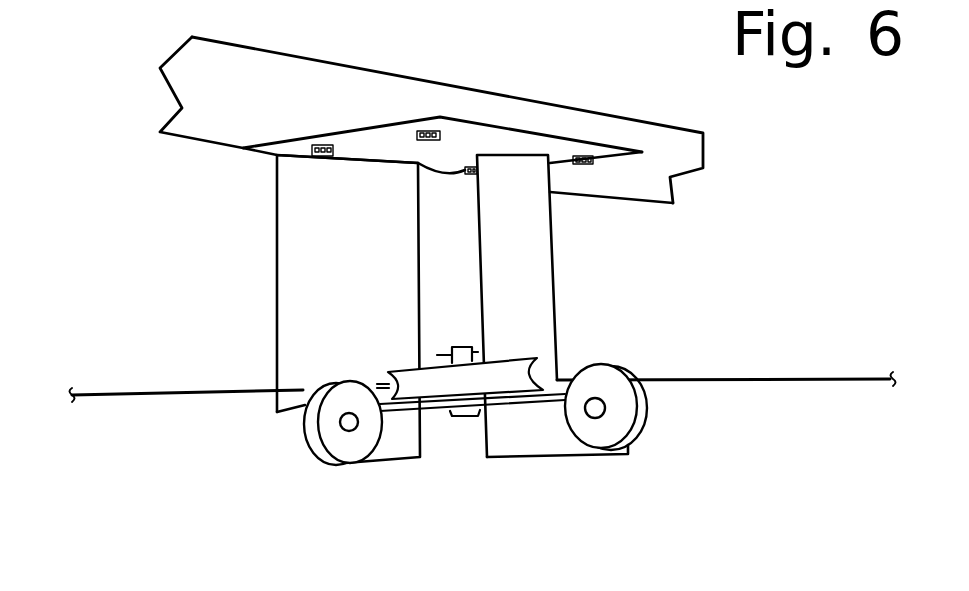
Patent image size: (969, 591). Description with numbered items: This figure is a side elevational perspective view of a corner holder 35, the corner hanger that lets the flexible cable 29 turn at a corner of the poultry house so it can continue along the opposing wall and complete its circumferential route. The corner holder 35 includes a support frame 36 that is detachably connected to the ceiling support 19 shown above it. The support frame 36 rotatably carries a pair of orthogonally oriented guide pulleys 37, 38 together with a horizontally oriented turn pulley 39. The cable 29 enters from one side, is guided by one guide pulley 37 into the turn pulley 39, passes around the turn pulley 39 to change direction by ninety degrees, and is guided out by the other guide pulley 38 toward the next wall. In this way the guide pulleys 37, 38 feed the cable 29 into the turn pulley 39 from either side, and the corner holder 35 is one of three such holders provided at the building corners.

The ceiling support 19 is at (338, 64).
The support frame 36 is at (277, 157).
The corner holder 35 is at (652, 249).
The turn pulley 39 is at (413, 368).
The guide pulley 37 is at (302, 434).
The guide pulley 38 is at (647, 418).
The cable 29 is at (117, 390).